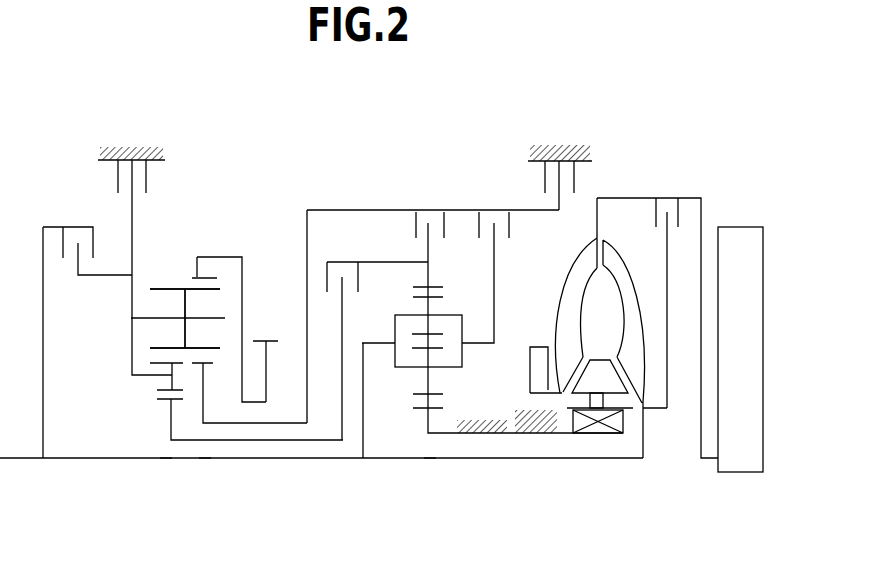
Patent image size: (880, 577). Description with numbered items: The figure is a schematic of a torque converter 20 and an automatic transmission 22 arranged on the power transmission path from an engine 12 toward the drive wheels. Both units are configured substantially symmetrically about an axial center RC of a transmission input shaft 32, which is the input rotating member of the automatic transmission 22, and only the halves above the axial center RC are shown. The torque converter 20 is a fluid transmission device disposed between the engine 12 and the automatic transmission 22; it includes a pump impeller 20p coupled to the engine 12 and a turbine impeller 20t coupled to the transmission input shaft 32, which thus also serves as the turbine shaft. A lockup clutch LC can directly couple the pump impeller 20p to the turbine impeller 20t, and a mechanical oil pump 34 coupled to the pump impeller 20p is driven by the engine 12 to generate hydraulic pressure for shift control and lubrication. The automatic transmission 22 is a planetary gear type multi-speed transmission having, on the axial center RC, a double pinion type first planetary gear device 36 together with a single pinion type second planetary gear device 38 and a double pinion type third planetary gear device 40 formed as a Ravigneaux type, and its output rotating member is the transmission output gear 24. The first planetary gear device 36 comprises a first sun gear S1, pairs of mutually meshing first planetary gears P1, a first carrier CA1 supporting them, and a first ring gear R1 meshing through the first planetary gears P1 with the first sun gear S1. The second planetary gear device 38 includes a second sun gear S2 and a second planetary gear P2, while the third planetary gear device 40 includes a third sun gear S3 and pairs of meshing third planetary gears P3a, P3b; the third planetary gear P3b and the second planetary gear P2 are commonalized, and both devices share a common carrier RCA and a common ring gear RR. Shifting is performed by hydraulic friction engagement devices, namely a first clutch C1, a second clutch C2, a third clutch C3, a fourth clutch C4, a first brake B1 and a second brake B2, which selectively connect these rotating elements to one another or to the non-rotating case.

The engine 12 is at (737, 238).
The torque converter 20 is at (596, 328).
The pump impeller 20p is at (570, 335).
The turbine impeller 20t is at (627, 308).
The automatic transmission 22 is at (112, 132).
The transmission output gear 24 is at (272, 340).
The transmission input shaft 32 is at (500, 460).
The mechanical oil pump 34 is at (538, 368).
The first planetary gear device 36 is at (430, 461).
The second planetary gear device 38 is at (205, 461).
The third planetary gear device 40 is at (166, 461).
The axial center RC is at (18, 460).
The common carrier RCA is at (132, 335).
The common ring gear RR is at (198, 275).
The first brake B1 is at (573, 185).
The second brake B2 is at (147, 176).
The first clutch C1 is at (377, 340).
The second clutch C2 is at (87, 240).
The third clutch C3 is at (433, 306).
The fourth clutch C4 is at (485, 266).
The first carrier CA1 is at (380, 342).
The first ring gear R1 is at (435, 285).
The first planetary gear P1 is at (447, 316).
The first sun gear S1 is at (413, 400).
The second sun gear S2 is at (208, 363).
The third sun gear S3 is at (160, 391).
The second planetary gear P2 is at (165, 288).
The third planetary gear P3b is at (185, 318).
The third planetary gear P3a is at (157, 363).
The lockup clutch LC is at (653, 214).